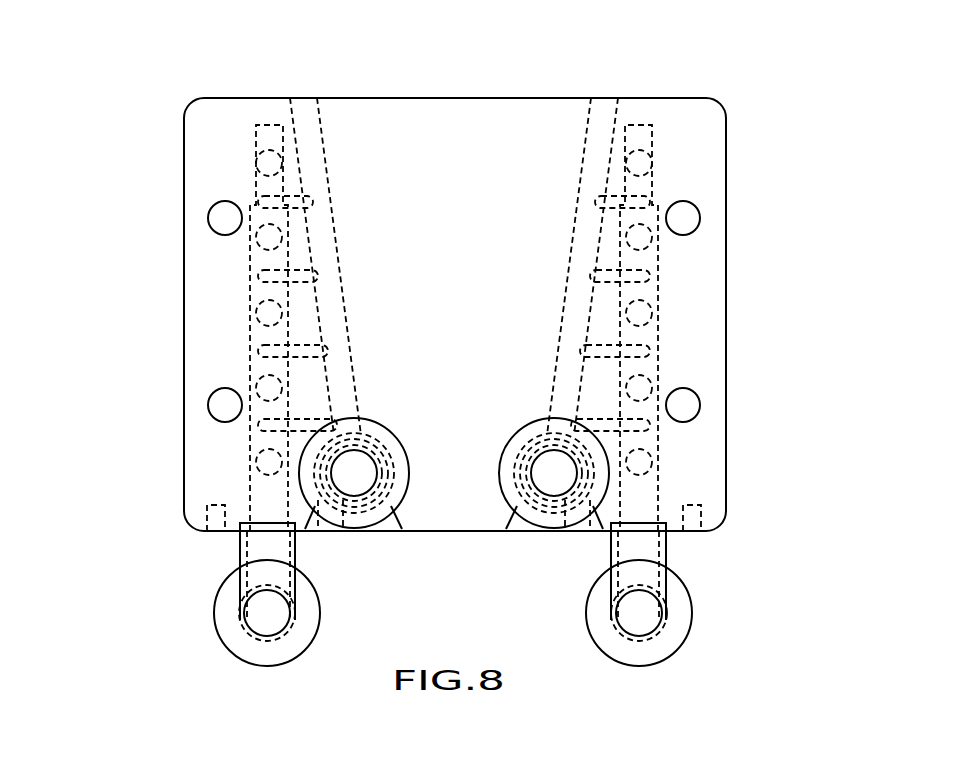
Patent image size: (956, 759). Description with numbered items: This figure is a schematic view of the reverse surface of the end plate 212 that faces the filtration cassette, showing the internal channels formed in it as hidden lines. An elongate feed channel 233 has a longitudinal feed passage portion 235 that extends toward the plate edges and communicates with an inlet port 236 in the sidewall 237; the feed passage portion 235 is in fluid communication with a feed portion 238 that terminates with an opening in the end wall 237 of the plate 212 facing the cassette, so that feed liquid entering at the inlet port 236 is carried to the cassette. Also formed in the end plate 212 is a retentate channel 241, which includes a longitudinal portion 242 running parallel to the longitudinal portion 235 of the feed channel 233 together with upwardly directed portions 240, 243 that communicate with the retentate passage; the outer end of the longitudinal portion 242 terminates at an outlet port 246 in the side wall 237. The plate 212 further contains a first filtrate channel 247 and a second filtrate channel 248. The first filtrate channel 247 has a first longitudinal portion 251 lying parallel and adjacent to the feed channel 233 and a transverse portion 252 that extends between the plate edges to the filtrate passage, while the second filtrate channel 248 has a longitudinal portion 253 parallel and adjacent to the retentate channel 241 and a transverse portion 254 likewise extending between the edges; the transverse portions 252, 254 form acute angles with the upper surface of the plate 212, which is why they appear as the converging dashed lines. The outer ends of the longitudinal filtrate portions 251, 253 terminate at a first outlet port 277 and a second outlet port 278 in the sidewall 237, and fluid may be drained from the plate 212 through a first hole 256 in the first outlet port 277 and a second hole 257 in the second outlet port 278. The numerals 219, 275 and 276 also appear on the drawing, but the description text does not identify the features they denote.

The end plate 212 is at (448, 66).
The base plate 219 is at (525, 267).
The feed channel 233 is at (660, 440).
The longitudinal feed passage portion 235 is at (660, 265).
The inlet port 236 is at (647, 533).
The sidewall 237 is at (676, 541).
The feed portion 238 is at (653, 460).
The upwardly directed portion of retentate channel 240 is at (256, 313).
The retentate channel 241 is at (250, 357).
The longitudinal portion of retentate channel 242 is at (250, 442).
The upwardly directed portion of retentate channel 243 is at (257, 163).
The outlet port 246 is at (261, 533).
The first filtrate channel 247 is at (587, 142).
The second filtrate channel 248 is at (323, 153).
The first longitudinal portion of first filtrate channel 251 is at (577, 201).
The transverse portion of first filtrate channel 252 is at (653, 355).
The longitudinal portion of second filtrate channel 253 is at (348, 343).
The transverse portion of second filtrate channel 254 is at (295, 204).
The first hole 256 is at (355, 473).
The second hole 257 is at (553, 473).
The right pivot ring 275 is at (693, 615).
The left pivot ring 276 is at (213, 617).
The first outlet port 277 is at (397, 531).
The second outlet port 278 is at (505, 531).